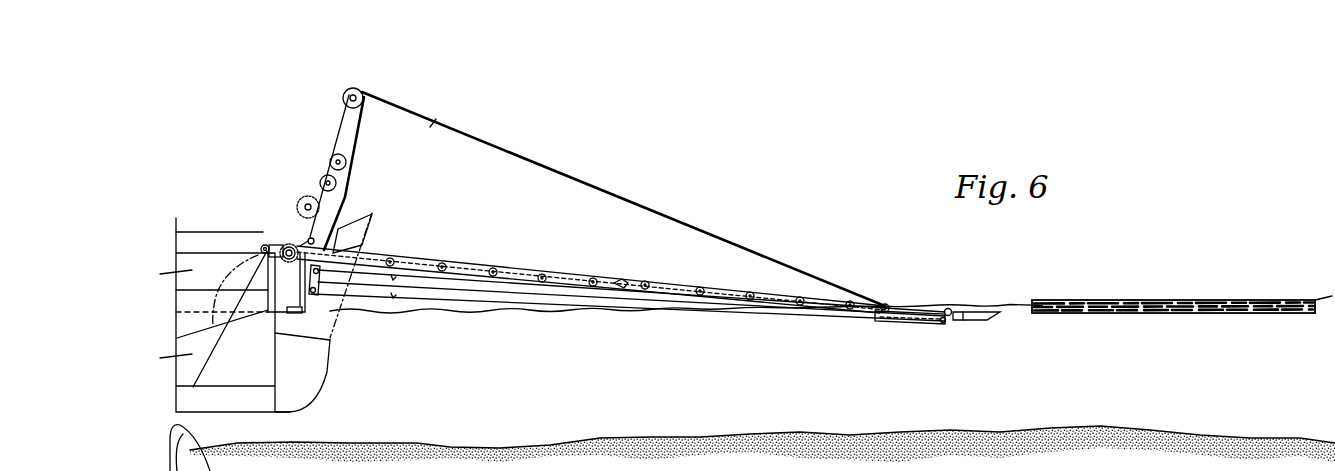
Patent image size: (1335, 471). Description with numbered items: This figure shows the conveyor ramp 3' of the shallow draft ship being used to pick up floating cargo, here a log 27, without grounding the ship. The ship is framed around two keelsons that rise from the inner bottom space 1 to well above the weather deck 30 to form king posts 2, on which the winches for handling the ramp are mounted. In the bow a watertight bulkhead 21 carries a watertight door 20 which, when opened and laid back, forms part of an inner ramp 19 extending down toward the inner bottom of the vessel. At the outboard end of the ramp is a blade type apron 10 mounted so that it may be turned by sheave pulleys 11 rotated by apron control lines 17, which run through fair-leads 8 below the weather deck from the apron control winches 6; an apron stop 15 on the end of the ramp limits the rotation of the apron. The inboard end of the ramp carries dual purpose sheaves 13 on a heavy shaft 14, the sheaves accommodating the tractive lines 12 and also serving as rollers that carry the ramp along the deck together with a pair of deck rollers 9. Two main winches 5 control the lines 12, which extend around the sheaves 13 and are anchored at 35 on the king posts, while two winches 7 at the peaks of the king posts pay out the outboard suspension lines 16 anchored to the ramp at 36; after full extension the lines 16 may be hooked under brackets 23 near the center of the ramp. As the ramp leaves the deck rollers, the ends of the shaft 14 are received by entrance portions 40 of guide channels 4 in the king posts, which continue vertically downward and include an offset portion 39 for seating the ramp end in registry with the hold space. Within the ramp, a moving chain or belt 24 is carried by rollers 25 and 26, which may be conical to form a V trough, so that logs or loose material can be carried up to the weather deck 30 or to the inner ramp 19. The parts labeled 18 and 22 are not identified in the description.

The inner bottom space 1 is at (192, 400).
The king posts 2 is at (208, 366).
The conveyor ramp 3' is at (910, 333).
The guide channels 4 is at (305, 288).
The main winches 5 is at (304, 200).
The apron control winches 6 is at (324, 179).
The winches 7 is at (346, 93).
The fair-leads 8 is at (320, 283).
The deck rollers 9 is at (261, 247).
The blade type apron 10 is at (970, 318).
The sheave pulleys 11 is at (948, 308).
The lines 12 is at (306, 240).
The dual purpose sheaves 13 is at (296, 252).
The heavy shaft 14 is at (278, 247).
The apron stop 15 is at (945, 322).
The outboard suspension lines 16 is at (538, 167).
The apron control lines 17 is at (346, 198).
The bracket 18 is at (368, 224).
The inner ramp 19 is at (182, 337).
The watertight door 20 is at (265, 288).
The watertight bulkhead 21 is at (278, 360).
The stern fairing 22 is at (318, 348).
The brackets 23 is at (626, 282).
The moving chain or belt 24 is at (428, 273).
The rollers 25 is at (494, 270).
The rollers 26 is at (467, 277).
The log 27 is at (1172, 306).
The weather deck 30 is at (197, 250).
The anchors 35 is at (333, 237).
The anchor point 36 is at (886, 304).
The offset portion 39 is at (288, 308).
The entrance portions 40 is at (288, 250).